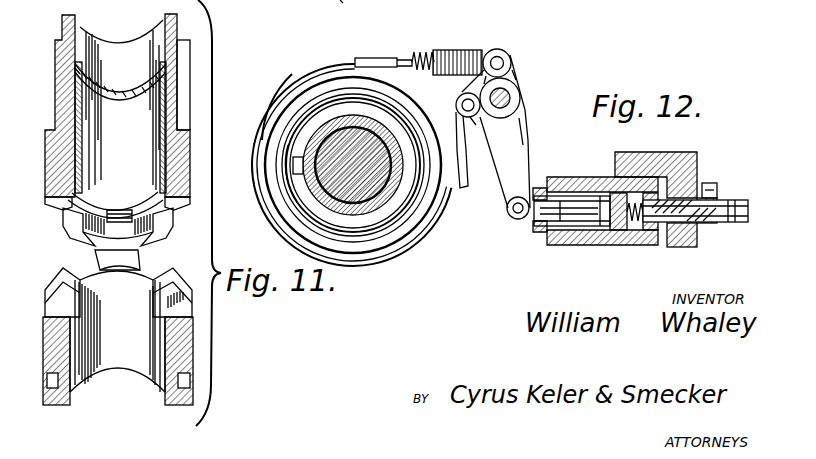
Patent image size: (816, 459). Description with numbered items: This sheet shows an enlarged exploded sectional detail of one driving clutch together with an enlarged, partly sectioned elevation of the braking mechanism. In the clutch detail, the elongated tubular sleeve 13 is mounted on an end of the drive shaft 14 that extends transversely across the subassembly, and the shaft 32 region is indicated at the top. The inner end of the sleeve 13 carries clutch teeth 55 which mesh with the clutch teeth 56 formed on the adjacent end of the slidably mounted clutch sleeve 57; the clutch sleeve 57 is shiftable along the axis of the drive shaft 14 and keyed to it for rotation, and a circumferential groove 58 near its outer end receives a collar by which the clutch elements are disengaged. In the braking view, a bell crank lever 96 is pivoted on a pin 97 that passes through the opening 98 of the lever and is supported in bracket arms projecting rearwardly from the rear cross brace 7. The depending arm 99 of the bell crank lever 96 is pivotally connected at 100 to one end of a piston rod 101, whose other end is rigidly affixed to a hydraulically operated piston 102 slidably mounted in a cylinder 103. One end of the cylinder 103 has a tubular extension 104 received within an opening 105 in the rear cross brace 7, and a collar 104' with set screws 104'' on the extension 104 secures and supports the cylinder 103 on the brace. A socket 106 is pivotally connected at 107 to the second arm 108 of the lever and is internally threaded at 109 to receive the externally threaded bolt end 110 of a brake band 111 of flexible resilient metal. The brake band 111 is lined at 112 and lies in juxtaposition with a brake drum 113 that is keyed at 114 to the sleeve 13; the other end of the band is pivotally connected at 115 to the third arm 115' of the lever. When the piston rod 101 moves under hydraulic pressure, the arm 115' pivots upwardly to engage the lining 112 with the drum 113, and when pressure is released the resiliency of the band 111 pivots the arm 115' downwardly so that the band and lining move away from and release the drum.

In FIG. 12, the rear cross brace 7 is at (700, 158).
In FIG. 11, the tubular sleeve 13 is at (164, 17).
In FIG. 11, the drive shaft 14 is at (330, 116).
In FIG. 11, the shaft 32 is at (351, 6).
In FIG. 11, the clutch teeth 55 is at (62, 212).
In FIG. 11, the clutch teeth 56 is at (95, 258).
In FIG. 11, the clutch sleeve 57 is at (45, 340).
In FIG. 11, the circumferential groove 58 is at (55, 382).
In FIG. 11, the bell crank lever 96 is at (528, 112).
In FIG. 11, the pin 97 is at (516, 76).
In FIG. 11, the opening 98 is at (512, 96).
In FIG. 11, the depending arm 99 is at (497, 180).
In FIG. 11, the pivotal connection 100 is at (515, 219).
In FIG. 12, the piston rod 101 is at (570, 228).
In FIG. 12, the piston 102 is at (615, 232).
In FIG. 12, the cylinder 103 is at (553, 177).
In FIG. 12, the tubular extension 104 is at (678, 249).
In FIG. 12, the collar 104' is at (725, 224).
In FIG. 12, the set screws 104'' is at (729, 176).
In FIG. 12, the opening 105 is at (692, 244).
In FIG. 11, the socket 106 is at (476, 52).
In FIG. 11, the pivotal connection 107 is at (504, 62).
In FIG. 11, the second arm 108 is at (501, 49).
In FIG. 11, the internal thread 109 is at (445, 52).
In FIG. 11, the bolt end 110 is at (424, 60).
In FIG. 11, the brake band 111 is at (298, 84).
In FIG. 11, the brake lining 112 is at (263, 142).
In FIG. 11, the brake drum 113 is at (292, 175).
In FIG. 11, the key 114 is at (295, 188).
In FIG. 11, the pivotal connection 115 is at (453, 105).
In FIG. 11, the third arm 115' is at (444, 135).